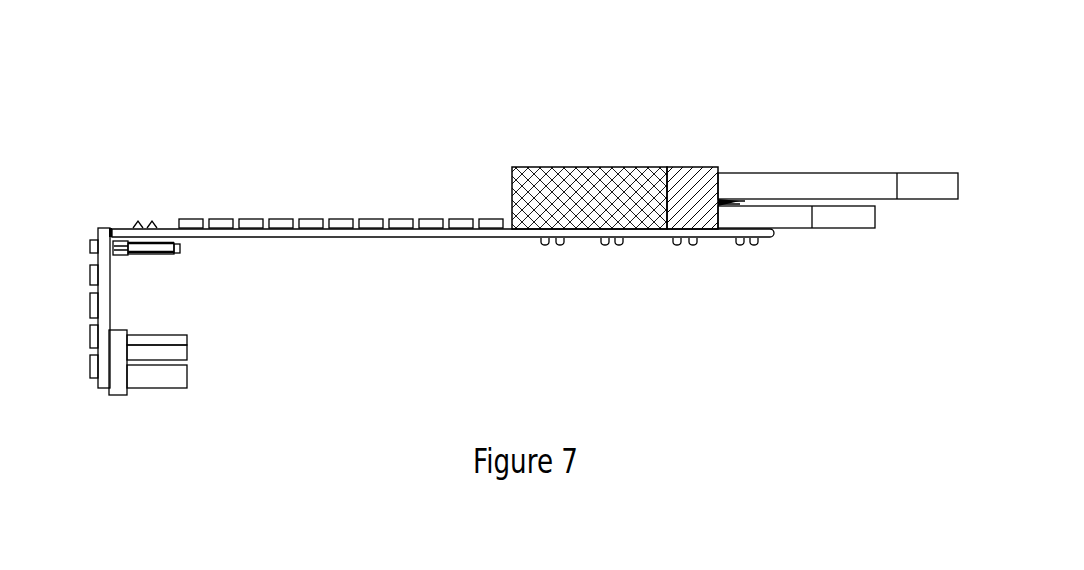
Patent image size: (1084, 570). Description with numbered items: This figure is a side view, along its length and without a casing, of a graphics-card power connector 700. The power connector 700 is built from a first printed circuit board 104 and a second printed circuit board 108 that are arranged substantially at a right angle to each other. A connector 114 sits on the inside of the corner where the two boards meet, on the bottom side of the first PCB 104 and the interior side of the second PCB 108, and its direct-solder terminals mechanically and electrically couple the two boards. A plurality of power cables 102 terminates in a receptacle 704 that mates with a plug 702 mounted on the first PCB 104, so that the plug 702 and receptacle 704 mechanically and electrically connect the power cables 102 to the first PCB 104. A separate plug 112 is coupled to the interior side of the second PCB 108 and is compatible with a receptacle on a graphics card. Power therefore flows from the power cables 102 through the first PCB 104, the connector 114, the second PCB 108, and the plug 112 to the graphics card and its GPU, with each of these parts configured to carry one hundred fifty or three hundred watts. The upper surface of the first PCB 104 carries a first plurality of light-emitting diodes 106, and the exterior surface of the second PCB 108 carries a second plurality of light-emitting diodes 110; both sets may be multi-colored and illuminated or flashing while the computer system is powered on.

The power connector 700 is at (356, 42).
The power cables 102 is at (920, 190).
The first printed circuit board 104 is at (407, 232).
The first light-emitting diodes 106 is at (273, 226).
The second printed circuit board 108 is at (107, 300).
The second light-emitting diodes 110 is at (95, 340).
The plug 112 is at (182, 357).
The connector 114 is at (175, 244).
The plug 702 is at (603, 165).
The receptacle 704 is at (694, 165).